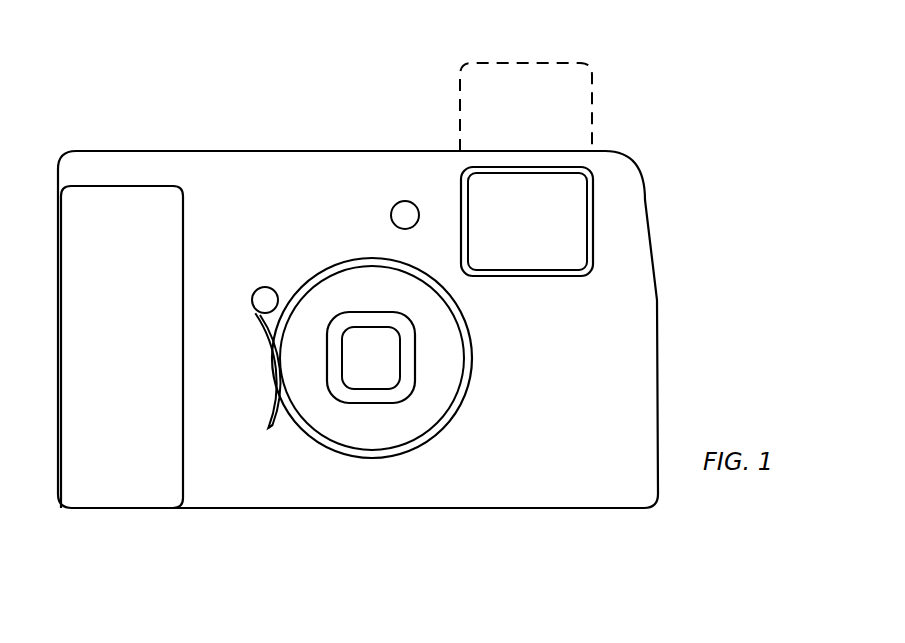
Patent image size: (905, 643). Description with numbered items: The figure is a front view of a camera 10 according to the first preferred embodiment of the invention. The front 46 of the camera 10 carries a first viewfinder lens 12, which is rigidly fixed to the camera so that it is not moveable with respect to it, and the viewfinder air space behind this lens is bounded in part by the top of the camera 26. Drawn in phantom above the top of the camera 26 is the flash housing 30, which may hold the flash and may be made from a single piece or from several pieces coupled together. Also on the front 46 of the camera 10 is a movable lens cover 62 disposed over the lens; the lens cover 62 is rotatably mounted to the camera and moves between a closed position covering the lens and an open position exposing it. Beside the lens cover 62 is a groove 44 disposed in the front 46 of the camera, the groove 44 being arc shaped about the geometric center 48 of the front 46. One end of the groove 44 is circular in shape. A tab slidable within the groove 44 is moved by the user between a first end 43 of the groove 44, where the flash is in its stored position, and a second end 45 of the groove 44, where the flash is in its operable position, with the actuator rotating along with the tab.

The camera 10 is at (722, 151).
The first viewfinder lens 12 is at (587, 228).
The top of the camera 26 is at (366, 151).
The flash housing 30 is at (588, 63).
The first end of the groove 43 is at (264, 296).
The groove 44 is at (248, 372).
The second end of the groove 45 is at (272, 432).
The front of the camera 46 is at (529, 497).
The geometric center of the front of the camera 48 is at (373, 358).
The lens cover 62 is at (371, 372).